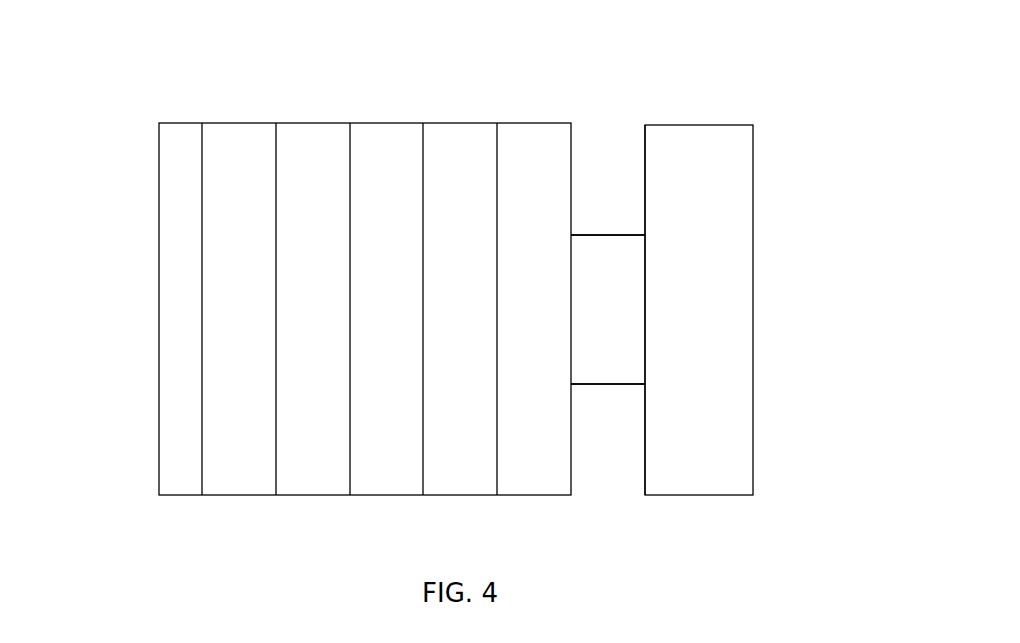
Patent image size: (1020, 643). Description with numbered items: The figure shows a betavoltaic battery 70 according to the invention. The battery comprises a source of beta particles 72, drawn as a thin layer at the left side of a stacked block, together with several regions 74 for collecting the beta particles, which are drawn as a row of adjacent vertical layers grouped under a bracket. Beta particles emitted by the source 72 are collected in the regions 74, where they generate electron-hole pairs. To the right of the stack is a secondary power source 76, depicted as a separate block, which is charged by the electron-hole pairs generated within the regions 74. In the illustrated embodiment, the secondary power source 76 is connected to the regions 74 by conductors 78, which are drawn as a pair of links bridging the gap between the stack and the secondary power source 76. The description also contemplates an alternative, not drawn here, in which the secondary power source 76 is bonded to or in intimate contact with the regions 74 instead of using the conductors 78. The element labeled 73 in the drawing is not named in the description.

The betavoltaic battery 70 is at (176, 106).
The source of beta particles 72 is at (238, 237).
The current collector layer 73 is at (177, 328).
The regions for collecting the beta particles 74 is at (571, 115).
The secondary power source 76 is at (715, 273).
The conductors 78 is at (602, 235).